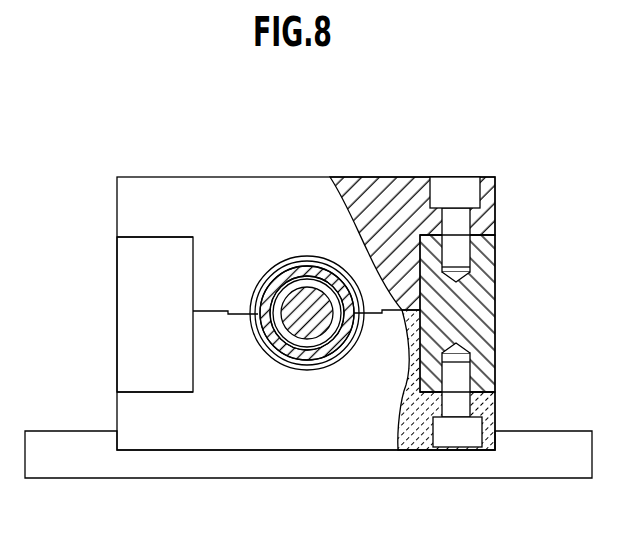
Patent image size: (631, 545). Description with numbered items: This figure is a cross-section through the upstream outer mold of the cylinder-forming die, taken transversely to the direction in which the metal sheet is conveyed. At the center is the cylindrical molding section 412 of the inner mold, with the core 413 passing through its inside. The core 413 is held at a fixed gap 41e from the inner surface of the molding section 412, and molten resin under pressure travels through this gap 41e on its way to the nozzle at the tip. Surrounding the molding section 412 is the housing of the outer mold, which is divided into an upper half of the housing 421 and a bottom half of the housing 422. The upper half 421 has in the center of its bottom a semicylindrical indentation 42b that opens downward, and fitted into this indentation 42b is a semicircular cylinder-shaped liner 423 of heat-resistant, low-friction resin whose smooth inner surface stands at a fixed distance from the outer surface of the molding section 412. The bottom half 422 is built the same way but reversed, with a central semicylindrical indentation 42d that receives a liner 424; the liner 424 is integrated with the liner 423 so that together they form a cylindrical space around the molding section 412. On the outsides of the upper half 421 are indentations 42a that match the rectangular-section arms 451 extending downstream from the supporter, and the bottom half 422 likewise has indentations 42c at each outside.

The upper half of the housing 421 is at (262, 181).
The bottom half of the housing 422 is at (218, 435).
The liner 423 is at (260, 283).
The indentation 42b is at (293, 258).
The cylindrical molding section 412 is at (327, 270).
The core 413 is at (288, 335).
The liner 424 is at (292, 367).
The gap 41e is at (328, 337).
The indentation 42d is at (330, 368).
The indentations 42a is at (143, 238).
The indentations 42c is at (138, 392).
The arms 451 is at (125, 333).